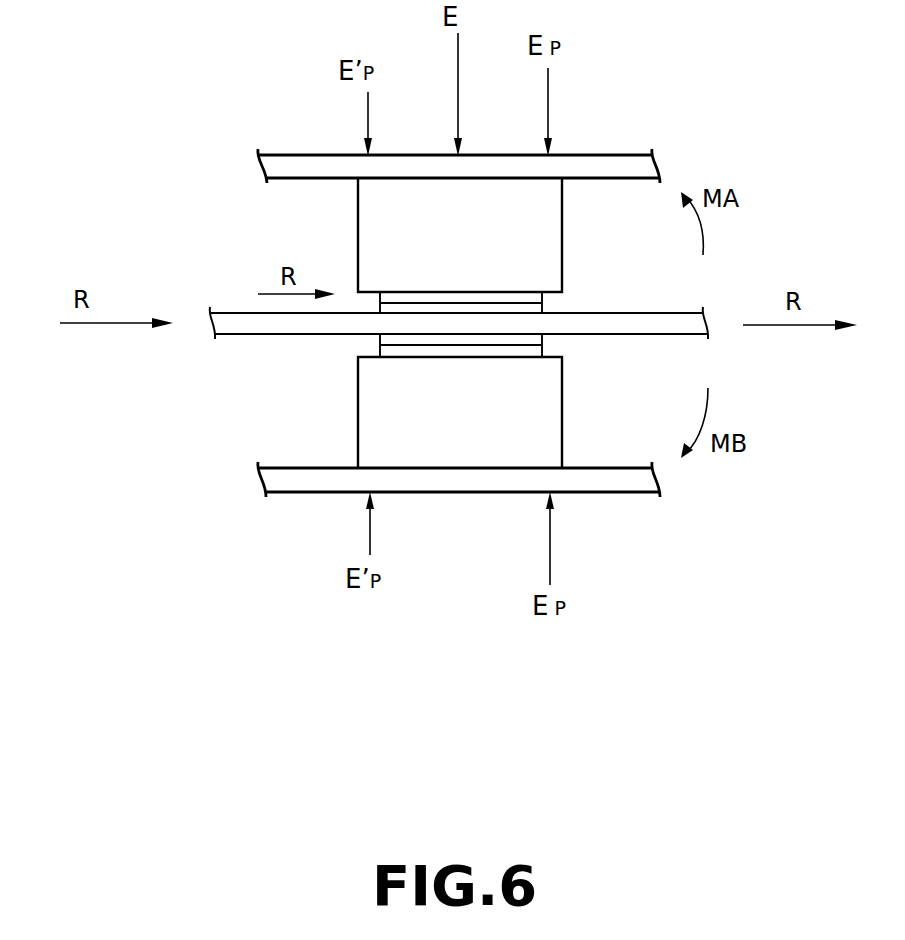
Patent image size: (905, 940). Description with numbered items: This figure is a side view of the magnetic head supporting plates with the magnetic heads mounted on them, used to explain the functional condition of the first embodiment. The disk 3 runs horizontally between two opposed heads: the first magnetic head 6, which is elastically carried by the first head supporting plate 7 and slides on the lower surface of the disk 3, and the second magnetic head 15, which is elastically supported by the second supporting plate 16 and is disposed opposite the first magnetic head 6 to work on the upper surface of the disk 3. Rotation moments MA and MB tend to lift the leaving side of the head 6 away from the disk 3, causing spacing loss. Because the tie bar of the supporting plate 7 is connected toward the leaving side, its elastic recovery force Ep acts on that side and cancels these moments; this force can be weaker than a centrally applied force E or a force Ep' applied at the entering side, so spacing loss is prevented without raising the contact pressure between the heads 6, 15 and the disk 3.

The disk 3 is at (254, 327).
The first magnetic head 6 is at (394, 350).
The first head supporting plate 7 is at (606, 481).
The second magnetic head 15 is at (392, 296).
The second supporting plate 16 is at (600, 161).